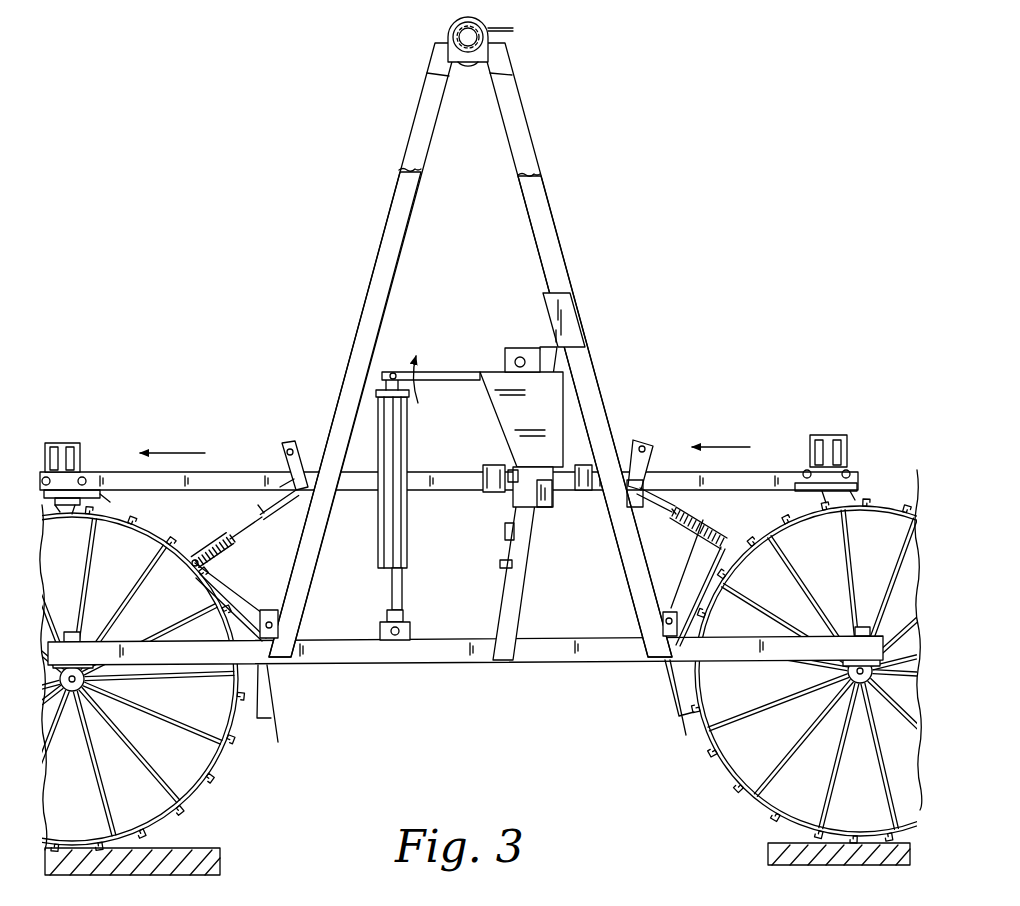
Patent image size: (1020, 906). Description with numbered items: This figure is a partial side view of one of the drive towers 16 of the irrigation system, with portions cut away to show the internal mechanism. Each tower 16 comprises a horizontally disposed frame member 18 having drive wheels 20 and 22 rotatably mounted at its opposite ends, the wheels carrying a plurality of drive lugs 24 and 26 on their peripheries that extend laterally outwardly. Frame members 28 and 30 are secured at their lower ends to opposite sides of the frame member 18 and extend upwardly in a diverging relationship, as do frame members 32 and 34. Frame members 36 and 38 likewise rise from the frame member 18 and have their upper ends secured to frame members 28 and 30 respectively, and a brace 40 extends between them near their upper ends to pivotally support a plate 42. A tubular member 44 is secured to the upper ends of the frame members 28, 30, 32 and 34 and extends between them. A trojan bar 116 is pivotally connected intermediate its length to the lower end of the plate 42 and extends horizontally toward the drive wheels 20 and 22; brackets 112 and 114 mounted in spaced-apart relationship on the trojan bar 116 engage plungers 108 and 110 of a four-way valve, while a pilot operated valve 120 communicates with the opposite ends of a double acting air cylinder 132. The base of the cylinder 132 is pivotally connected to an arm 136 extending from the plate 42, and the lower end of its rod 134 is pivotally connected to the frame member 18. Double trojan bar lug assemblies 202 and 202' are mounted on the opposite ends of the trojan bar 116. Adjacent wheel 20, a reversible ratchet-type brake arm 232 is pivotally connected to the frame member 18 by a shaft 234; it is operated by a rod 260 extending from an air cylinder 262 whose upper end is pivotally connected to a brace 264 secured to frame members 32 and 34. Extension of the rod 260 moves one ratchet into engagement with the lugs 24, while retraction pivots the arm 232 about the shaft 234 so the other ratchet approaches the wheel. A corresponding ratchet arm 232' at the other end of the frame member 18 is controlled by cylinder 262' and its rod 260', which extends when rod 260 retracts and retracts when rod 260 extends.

The tower 16 is at (628, 374).
The frame member 18 is at (572, 652).
The drive wheel 20 is at (195, 803).
The drive wheel 22 is at (770, 798).
The drive lugs 24 is at (236, 748).
The drive lugs 26 is at (718, 774).
The frame member 28 is at (526, 116).
The frame member 30 is at (548, 212).
The frame member 32 is at (424, 108).
The frame member 34 is at (400, 204).
The frame member 36 is at (508, 565).
The frame member 38 is at (518, 602).
The brace 40 is at (532, 350).
The plate 42 is at (505, 403).
The tubular member 44 is at (473, 26).
The plunger 108 is at (513, 470).
The plunger 110 is at (548, 497).
The bracket 112 is at (490, 494).
The bracket 114 is at (580, 492).
The trojan bar 116 is at (236, 476).
The pilot operated valve 120 is at (504, 537).
The double acting air cylinder 132 is at (378, 552).
The rod 134 is at (388, 597).
The arm 136 is at (455, 372).
The double trojan bar lug assembly 202 is at (93, 455).
The double trojan bar lug assembly 202' is at (854, 449).
The ratchet arm 232 is at (309, 703).
The ratchet arm 232' is at (648, 699).
The shaft 234 is at (282, 625).
The rod 260 is at (220, 538).
The rod 260' is at (717, 527).
The air cylinder 262 is at (248, 509).
The air cylinder 262' is at (684, 496).
The brace 264 is at (298, 505).